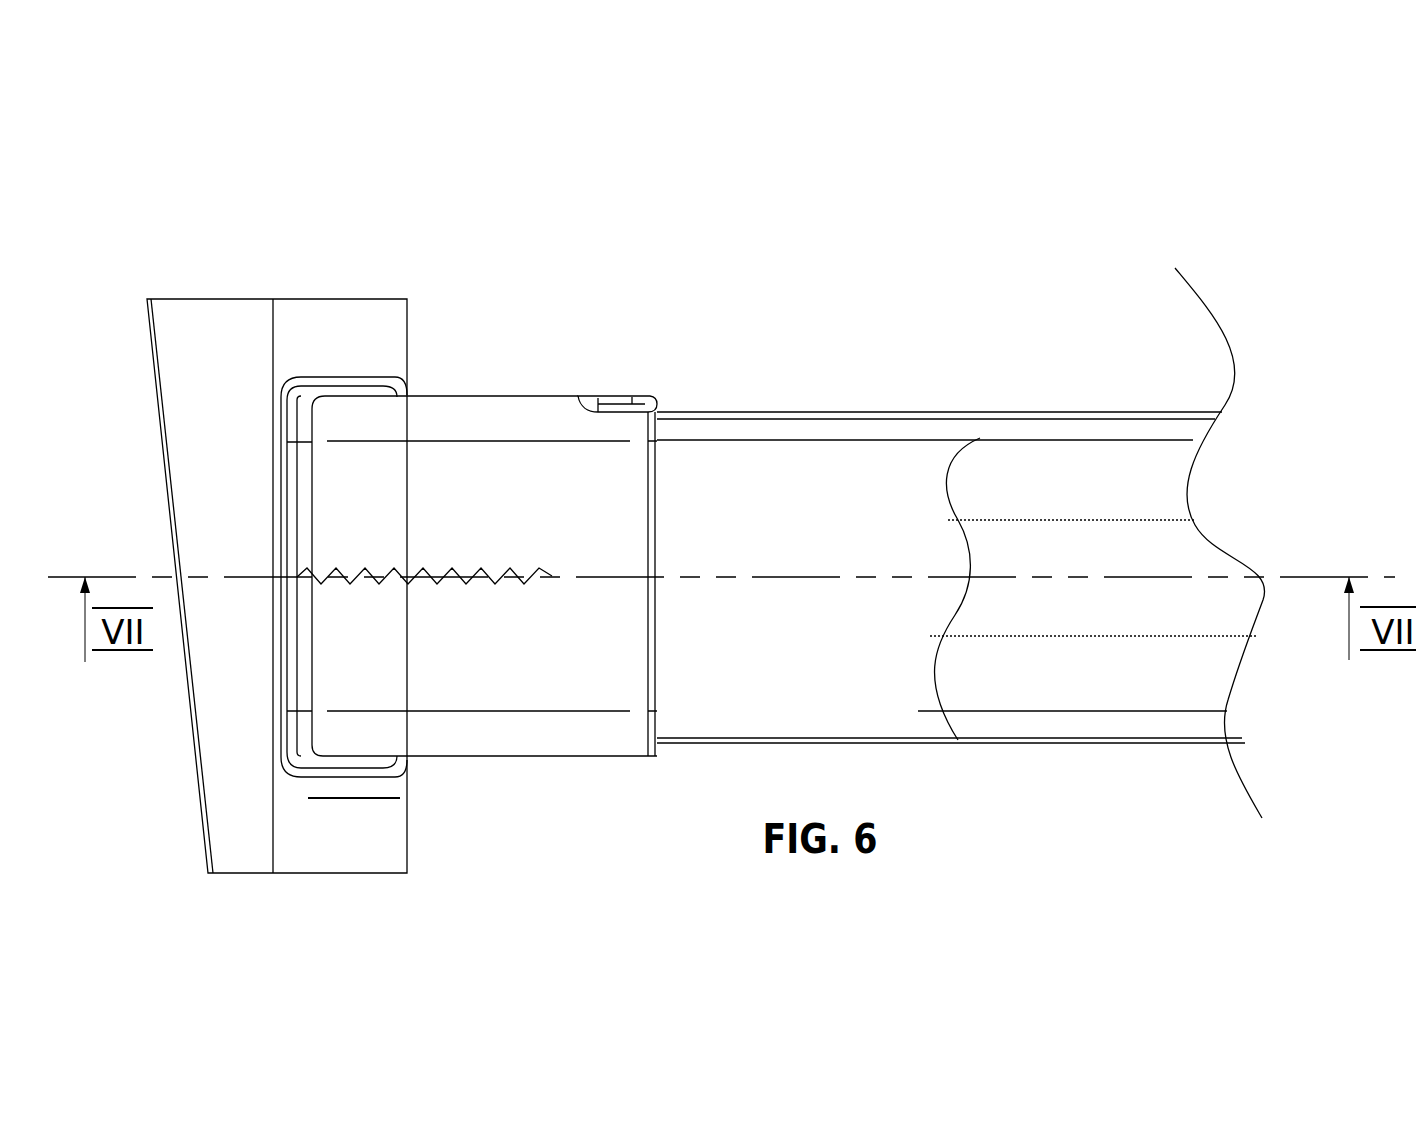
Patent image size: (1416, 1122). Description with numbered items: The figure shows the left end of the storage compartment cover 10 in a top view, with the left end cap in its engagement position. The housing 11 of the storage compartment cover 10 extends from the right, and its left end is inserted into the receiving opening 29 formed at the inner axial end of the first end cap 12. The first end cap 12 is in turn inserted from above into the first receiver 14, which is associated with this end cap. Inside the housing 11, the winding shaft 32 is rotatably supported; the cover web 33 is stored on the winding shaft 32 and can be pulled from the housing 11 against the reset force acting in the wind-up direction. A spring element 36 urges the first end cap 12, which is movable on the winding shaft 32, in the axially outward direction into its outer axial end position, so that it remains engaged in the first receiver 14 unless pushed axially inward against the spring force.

The storage compartment cover 10 is at (812, 446).
The housing 11 is at (970, 395).
The first end cap 12 is at (502, 360).
The first receiver 14 is at (347, 272).
The receiving opening 29 is at (668, 418).
The winding shaft 32 is at (1113, 520).
The cover web 33 is at (1157, 667).
The spring element 36 is at (432, 560).